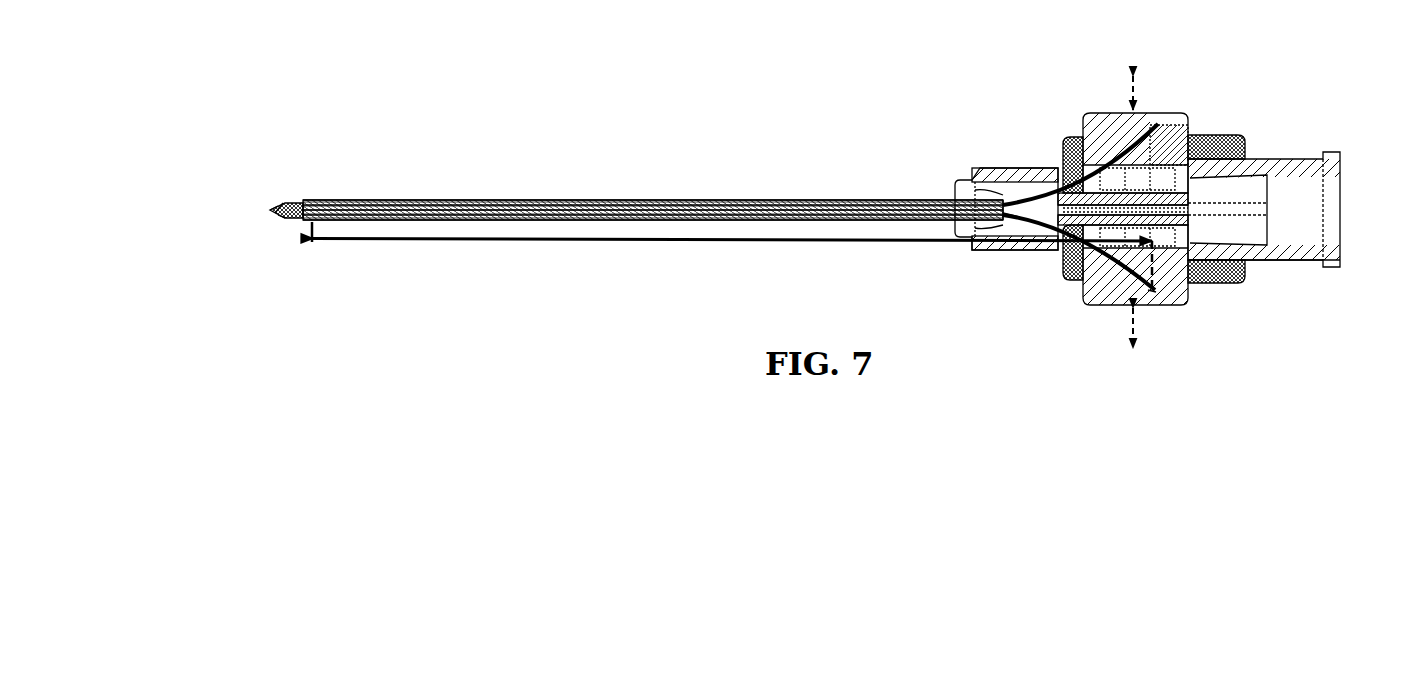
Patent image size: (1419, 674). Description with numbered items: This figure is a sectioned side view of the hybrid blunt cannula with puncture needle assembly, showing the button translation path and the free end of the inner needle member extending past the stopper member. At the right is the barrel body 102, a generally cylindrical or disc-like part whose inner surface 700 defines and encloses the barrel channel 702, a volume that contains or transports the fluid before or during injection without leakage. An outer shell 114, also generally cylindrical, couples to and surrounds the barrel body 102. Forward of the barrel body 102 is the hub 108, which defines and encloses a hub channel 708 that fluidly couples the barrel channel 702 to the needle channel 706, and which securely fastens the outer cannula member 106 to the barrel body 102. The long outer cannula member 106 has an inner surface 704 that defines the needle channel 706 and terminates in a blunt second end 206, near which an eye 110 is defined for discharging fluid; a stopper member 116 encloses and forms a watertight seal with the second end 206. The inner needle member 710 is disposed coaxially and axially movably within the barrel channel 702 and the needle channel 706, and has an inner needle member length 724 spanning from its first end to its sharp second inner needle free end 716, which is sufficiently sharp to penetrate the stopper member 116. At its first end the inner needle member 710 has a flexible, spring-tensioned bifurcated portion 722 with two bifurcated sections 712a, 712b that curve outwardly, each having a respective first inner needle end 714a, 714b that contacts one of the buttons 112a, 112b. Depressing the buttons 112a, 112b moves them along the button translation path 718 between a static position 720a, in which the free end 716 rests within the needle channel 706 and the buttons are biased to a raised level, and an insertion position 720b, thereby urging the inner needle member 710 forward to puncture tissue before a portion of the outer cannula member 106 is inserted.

The barrel body 102 is at (1312, 256).
The outer cannula member 106 is at (735, 200).
The hub 108 is at (1022, 170).
The eye 110 is at (306, 203).
The button 112a is at (1124, 113).
The button 112b is at (1092, 305).
The outer shell 114 is at (1228, 284).
The stopper member 116 is at (281, 202).
The second end 206 is at (281, 220).
The inner surface 700 is at (1322, 243).
The barrel channel 702 is at (1264, 209).
The inner surface 704 is at (640, 199).
The needle channel 706 is at (290, 201).
The hub channel 708 is at (985, 190).
The inner needle member 710 is at (990, 205).
The bifurcated section 712a is at (1106, 182).
The bifurcated section 712b is at (1044, 240).
The first inner needle end 714a is at (1160, 128).
The first inner needle end 714b is at (1149, 290).
The second inner needle free end 716 is at (272, 210).
The button translation path 718 is at (1140, 92).
The static position 720a is at (1172, 130).
The insertion position 720b is at (1205, 170).
The bifurcated portion 722 is at (995, 220).
The inner needle member length 724 is at (612, 243).